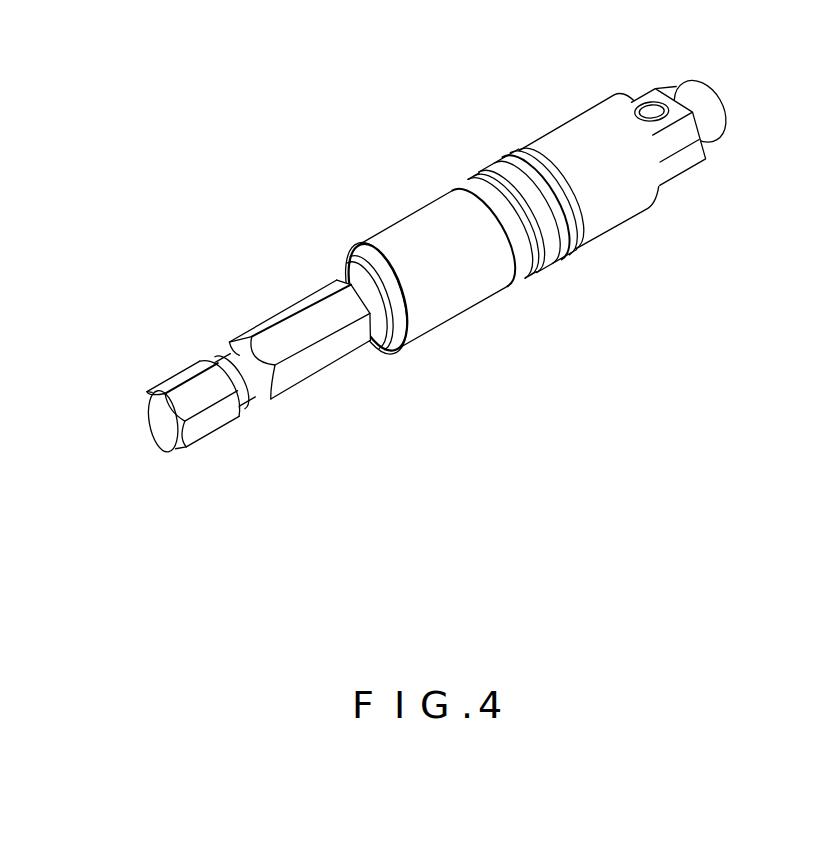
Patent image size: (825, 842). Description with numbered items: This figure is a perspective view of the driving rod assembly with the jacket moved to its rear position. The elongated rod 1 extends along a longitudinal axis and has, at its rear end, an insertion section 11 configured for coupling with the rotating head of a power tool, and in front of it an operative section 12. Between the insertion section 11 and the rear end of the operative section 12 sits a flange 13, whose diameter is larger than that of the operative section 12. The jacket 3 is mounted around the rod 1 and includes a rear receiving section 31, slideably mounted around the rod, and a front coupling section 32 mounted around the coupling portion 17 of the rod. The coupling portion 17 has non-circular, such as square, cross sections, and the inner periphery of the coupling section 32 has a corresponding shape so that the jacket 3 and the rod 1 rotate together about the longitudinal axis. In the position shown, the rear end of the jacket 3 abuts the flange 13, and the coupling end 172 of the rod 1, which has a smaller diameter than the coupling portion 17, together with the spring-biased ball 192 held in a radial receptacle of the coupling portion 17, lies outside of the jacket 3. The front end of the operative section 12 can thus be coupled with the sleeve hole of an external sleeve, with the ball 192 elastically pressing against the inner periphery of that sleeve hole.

The rod 1 is at (475, 231).
The insertion section 11 is at (271, 328).
The flange 13 is at (395, 322).
The jacket 3 is at (505, 244).
The receiving section 31 is at (460, 293).
The coupling section 32 is at (615, 197).
The operative section 12 is at (681, 155).
The coupling portion 17 is at (666, 150).
The coupling end 172 is at (708, 126).
The ball 192 is at (651, 107).